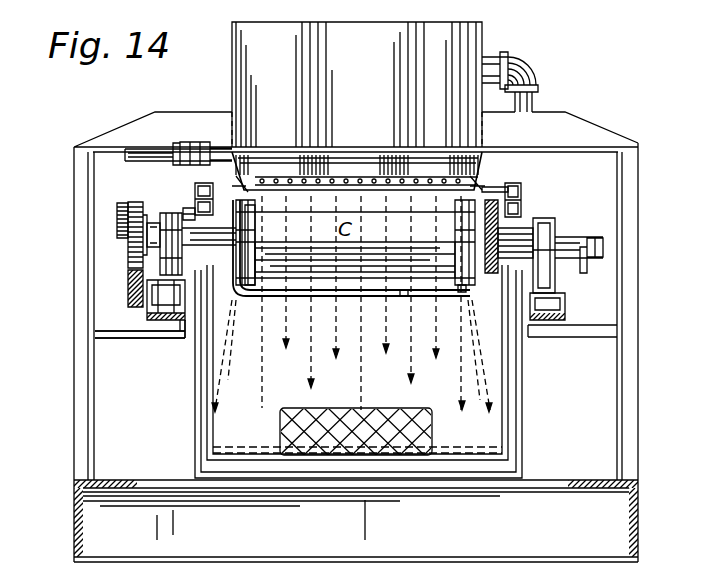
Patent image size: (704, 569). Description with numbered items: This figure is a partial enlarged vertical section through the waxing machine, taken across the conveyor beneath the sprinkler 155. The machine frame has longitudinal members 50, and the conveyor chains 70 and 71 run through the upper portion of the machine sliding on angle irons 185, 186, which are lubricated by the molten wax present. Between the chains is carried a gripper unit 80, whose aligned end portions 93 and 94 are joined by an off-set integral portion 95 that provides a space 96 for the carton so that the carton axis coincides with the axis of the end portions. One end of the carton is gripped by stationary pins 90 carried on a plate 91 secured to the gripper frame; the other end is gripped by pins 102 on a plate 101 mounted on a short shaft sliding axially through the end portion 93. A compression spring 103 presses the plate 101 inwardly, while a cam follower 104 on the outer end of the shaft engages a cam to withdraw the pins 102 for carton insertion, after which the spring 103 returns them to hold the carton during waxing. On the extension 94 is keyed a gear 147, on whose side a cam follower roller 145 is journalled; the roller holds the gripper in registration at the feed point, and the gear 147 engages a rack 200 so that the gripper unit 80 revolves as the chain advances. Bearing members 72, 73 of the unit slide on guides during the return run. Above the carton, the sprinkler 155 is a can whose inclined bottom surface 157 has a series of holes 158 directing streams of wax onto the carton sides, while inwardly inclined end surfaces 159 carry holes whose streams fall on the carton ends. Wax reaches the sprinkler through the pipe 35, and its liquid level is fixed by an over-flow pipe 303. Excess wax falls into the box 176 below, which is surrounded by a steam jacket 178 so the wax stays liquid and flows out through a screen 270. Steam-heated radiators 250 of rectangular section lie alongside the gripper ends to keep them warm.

The pipe 35 is at (140, 149).
The longitudinal members 50 is at (77, 508).
The chain 70 is at (562, 318).
The chain 71 is at (181, 339).
The bearing member 72 is at (546, 226).
The bearing member 73 is at (170, 257).
The gripper unit 80 is at (300, 298).
The stationary pins 90 is at (256, 230).
The plate 91 is at (247, 297).
The end portion 93 is at (520, 233).
The end portion 94 is at (190, 218).
The off-set integral portion 95 is at (404, 297).
The space 96 is at (388, 280).
The plate 101 is at (462, 292).
The pins 102 is at (492, 183).
The compression spring 103 is at (476, 297).
The cam follower 104 is at (590, 265).
The cam follower roller 145 is at (121, 222).
The gear 147 is at (128, 252).
The sprinkler 155 is at (482, 50).
The inclined bottom surface 157 is at (357, 178).
The holes 158 is at (274, 182).
The inwardly inclined surfaces 159 is at (256, 187).
The box 176 is at (492, 393).
The steam jacket 178 is at (512, 430).
The angle iron 185 is at (562, 315).
The angle iron 186 is at (140, 313).
The rack 200 is at (130, 290).
The radiator 250 is at (196, 188).
The screen 270 is at (357, 400).
The over-flow pipe 303 is at (528, 78).